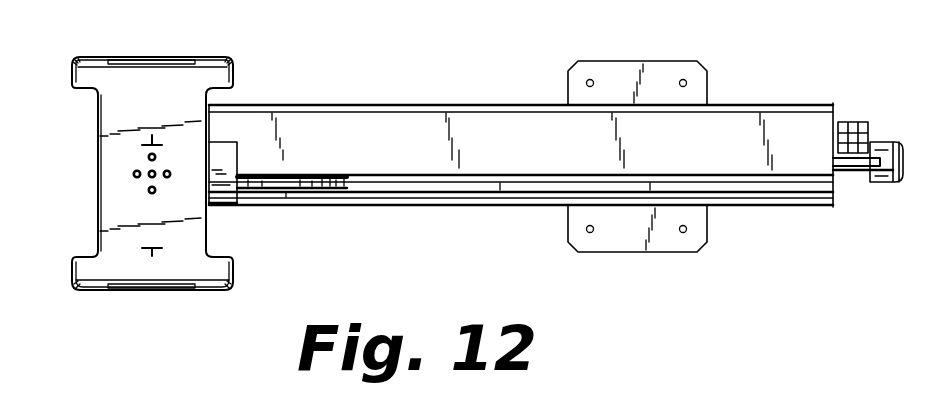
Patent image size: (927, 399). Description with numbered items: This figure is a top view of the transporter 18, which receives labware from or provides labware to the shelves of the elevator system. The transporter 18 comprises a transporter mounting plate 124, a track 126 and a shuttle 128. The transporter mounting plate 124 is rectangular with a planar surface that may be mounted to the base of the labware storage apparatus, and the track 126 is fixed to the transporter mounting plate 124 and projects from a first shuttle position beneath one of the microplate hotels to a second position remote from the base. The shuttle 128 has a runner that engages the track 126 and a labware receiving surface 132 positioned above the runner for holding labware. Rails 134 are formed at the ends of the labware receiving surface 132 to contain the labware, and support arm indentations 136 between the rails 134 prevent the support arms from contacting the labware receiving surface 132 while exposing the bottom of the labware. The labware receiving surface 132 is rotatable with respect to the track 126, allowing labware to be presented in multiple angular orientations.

The transporter 18 is at (398, 103).
The transporter mounting plate 124 is at (625, 242).
The track 126 is at (430, 180).
The shuttle 128 is at (123, 248).
The labware receiving surface 132 is at (155, 88).
The rails 134 is at (100, 63).
The support arm indentations 136 is at (98, 132).